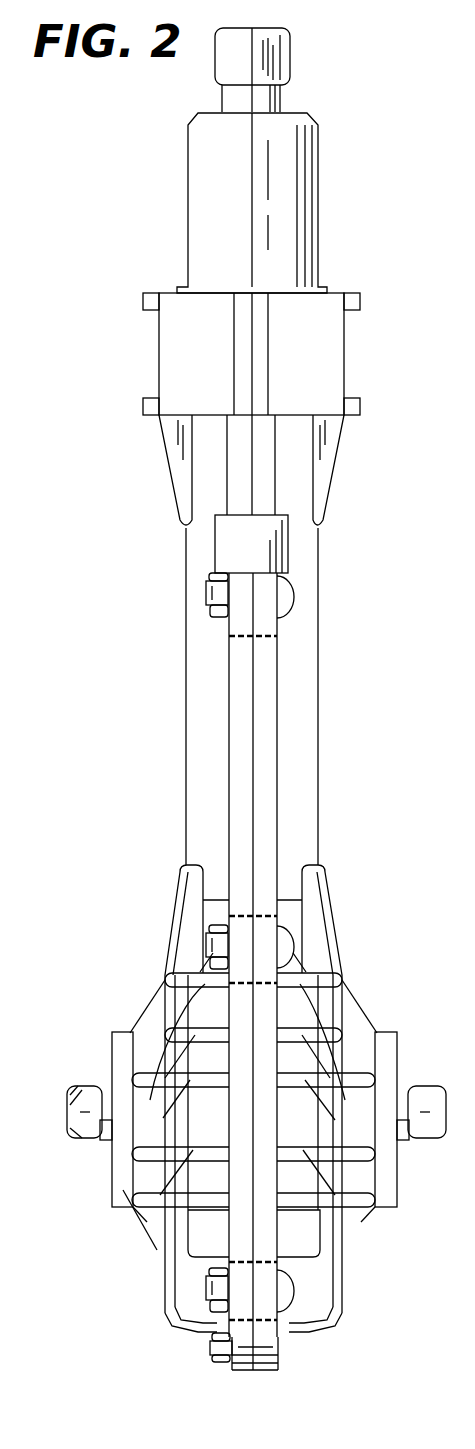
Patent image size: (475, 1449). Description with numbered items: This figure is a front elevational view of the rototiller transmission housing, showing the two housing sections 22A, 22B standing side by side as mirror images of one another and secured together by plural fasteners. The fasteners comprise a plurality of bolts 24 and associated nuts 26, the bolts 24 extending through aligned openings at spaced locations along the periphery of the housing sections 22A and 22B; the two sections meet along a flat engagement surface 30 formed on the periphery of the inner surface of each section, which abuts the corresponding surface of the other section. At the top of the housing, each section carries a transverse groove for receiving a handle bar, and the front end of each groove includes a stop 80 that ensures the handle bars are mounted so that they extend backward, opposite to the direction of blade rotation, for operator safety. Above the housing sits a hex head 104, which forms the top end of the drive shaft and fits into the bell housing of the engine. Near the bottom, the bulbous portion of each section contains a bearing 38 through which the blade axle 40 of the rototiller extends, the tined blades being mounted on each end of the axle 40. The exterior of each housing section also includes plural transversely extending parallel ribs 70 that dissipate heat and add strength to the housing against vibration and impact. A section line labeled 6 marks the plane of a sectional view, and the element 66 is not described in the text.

The section line 6- 6 is at (252, 0).
The hex head 104 is at (278, 67).
The housing section 22A is at (328, 192).
The housing section 22B is at (180, 184).
The stop 80 is at (168, 338).
The bolt 24 is at (290, 598).
The nut 26 is at (210, 608).
The cage arm 66 is at (123, 1032).
The axle 40 is at (95, 1090).
The bearing 38 is at (93, 1140).
The transverse rib 70 is at (197, 1152).
The flat engagement surface 30 is at (197, 1256).